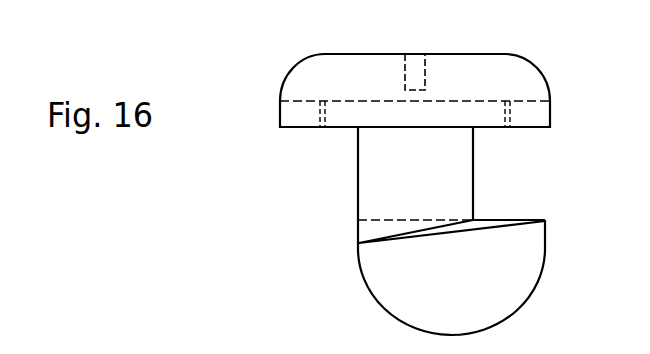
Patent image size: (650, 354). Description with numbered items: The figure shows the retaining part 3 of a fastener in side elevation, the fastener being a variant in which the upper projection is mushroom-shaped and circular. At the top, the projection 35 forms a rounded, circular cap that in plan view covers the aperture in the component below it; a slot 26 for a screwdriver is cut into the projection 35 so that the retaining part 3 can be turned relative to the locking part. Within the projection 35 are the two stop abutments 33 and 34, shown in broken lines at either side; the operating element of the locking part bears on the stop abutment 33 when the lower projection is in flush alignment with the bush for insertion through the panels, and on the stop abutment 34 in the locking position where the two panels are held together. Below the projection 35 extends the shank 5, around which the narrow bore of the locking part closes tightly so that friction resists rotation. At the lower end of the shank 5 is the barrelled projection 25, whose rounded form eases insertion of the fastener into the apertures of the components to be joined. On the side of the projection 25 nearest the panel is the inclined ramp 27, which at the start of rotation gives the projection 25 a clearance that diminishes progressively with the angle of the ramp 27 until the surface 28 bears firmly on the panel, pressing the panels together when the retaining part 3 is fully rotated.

The projection 35 is at (308, 70).
The slot 26 is at (415, 70).
The stop abutment 34 is at (322, 112).
The stop abutment 33 is at (510, 122).
The shank 5 is at (368, 183).
The projection 25 is at (405, 303).
The surface 28 is at (517, 220).
The ramp 27 is at (483, 229).
The retaining part 3 is at (355, 240).